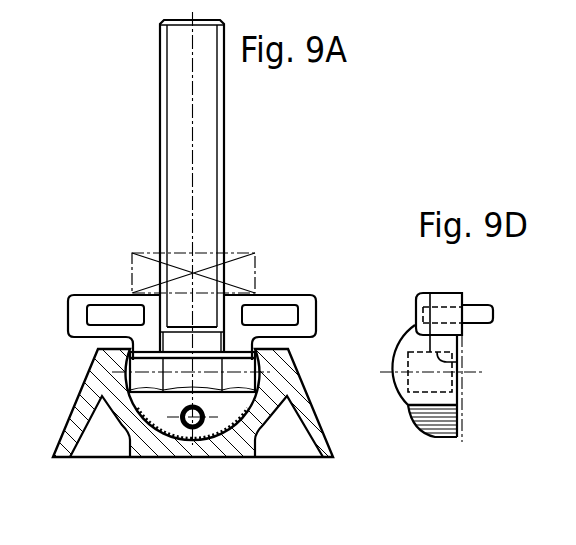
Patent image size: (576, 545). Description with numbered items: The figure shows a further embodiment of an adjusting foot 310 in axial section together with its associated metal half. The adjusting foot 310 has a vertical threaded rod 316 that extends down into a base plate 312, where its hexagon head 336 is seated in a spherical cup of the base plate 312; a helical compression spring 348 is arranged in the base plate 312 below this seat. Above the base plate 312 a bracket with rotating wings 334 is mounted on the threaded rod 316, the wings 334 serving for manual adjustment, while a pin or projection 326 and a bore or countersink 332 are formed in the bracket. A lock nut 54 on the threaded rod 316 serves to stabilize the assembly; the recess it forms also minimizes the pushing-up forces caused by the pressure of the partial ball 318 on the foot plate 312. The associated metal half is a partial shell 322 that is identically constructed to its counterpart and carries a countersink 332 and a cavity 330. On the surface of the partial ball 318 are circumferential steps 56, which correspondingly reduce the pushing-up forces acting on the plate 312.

In FIG. 9A, the adjusting foot 310 is at (135, 164).
In FIG. 9A, the threaded rod 316 is at (224, 118).
In FIG. 9A, the lock nut 54 is at (235, 250).
In FIG. 9A, the pin, projection 326 is at (105, 313).
In FIG. 9A, the bore, countersink 332 is at (267, 313).
In FIG. 9D, the bore, countersink 332 is at (480, 312).
In FIG. 9A, the wing 334 is at (195, 297).
In FIG. 9A, the hexagon, head threaded rod 336 is at (140, 380).
In FIG. 9A, the helical compression spring 348 is at (188, 427).
In FIG. 9A, the base plate 312 is at (212, 438).
In FIG. 9D, the partial ball 318 is at (418, 395).
In FIG. 9D, the cavity 330 is at (457, 361).
In FIG. 9D, the shell halves, partial shell 322 is at (462, 378).
In FIG. 9D, the circumferential steps 56 is at (436, 433).